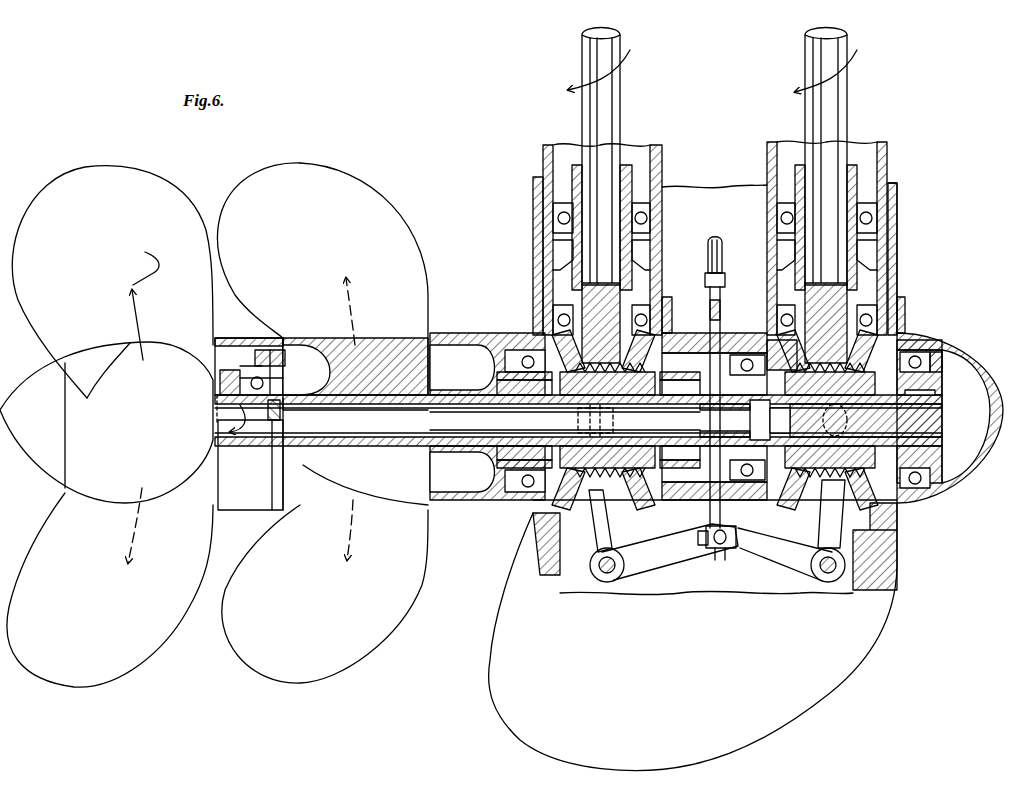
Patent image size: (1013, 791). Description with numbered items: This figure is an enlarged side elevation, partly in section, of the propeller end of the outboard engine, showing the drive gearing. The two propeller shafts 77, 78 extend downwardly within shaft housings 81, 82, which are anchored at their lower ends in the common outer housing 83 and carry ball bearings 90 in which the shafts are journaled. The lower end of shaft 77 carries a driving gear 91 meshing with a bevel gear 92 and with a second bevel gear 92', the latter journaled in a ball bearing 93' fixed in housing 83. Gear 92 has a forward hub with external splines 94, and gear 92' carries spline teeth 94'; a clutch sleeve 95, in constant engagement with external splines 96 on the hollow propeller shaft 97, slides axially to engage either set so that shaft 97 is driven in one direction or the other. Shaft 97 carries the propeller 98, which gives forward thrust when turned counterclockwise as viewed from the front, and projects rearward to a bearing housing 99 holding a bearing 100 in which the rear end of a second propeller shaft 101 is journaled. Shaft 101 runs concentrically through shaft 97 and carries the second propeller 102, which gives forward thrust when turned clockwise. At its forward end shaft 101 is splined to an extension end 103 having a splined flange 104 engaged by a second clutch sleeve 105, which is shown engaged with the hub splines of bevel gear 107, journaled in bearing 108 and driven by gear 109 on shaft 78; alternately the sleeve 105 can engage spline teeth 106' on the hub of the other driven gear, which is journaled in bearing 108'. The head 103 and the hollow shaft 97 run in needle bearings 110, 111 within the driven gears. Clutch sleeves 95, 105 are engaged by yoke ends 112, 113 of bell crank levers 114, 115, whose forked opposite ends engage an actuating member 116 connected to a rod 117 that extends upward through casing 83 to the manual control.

The propeller shaft 77 is at (582, 43).
The propeller shaft 78 is at (805, 45).
The shaft housing 81 is at (660, 145).
The shaft housing 82 is at (885, 142).
The common outer housing 83 is at (897, 229).
The ball bearings 90 is at (560, 222).
The driving gear 91 is at (690, 322).
The bevel gear 92 is at (524, 455).
The bevel gear 92' is at (659, 457).
The ball bearing 93' is at (509, 451).
The external splines 94 is at (589, 379).
The external spline teeth 94' is at (670, 420).
The clutch sleeve 95 is at (540, 345).
The external splines 96 is at (603, 478).
The hollow propeller shaft 97 is at (445, 393).
The propeller 98 is at (340, 338).
The bearing housing 99 is at (246, 338).
The bearing 100 is at (265, 412).
The second propeller shaft 101 is at (450, 420).
The second propeller 102 is at (106, 427).
The extension end 103 is at (915, 415).
The exteriorly splined flange 104 is at (827, 478).
The clutch sleeve 105 is at (827, 342).
The spline teeth 106' is at (766, 417).
The bevel gear 107 is at (760, 336).
The bearing 108 is at (950, 419).
The bearing 108' is at (717, 531).
The gear 109 is at (898, 305).
The needle bearing 110 is at (920, 390).
The needle bearing 111 is at (512, 440).
The yoke end 112 is at (612, 420).
The yoke end 113 is at (850, 418).
The bell crank lever 114 is at (590, 530).
The bell crank lever 115 is at (870, 540).
The actuating member 116 is at (718, 566).
The rod 117 is at (715, 238).